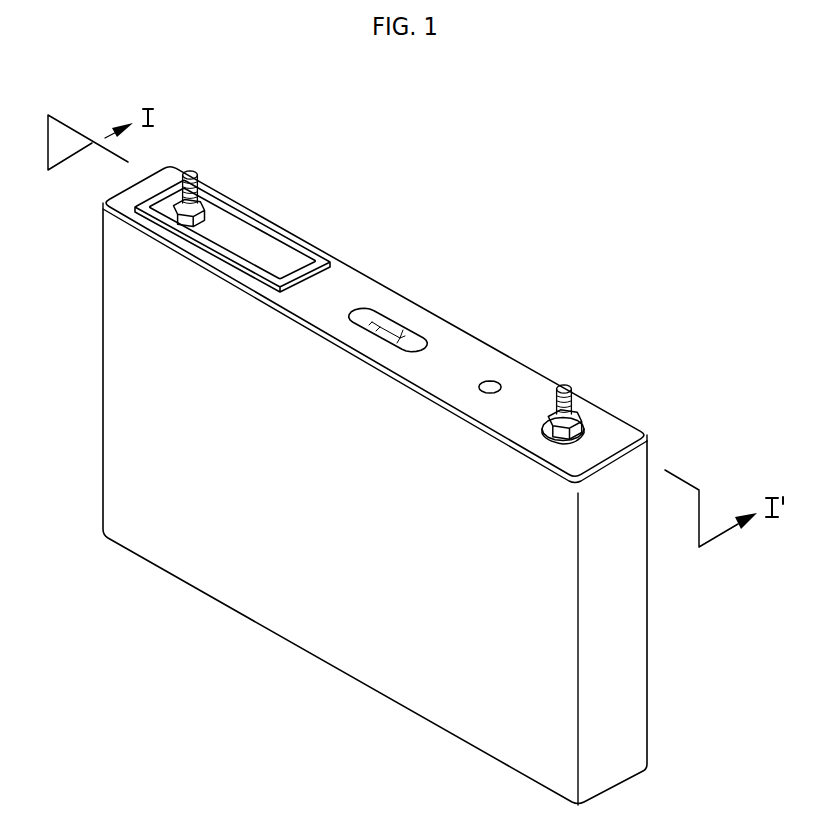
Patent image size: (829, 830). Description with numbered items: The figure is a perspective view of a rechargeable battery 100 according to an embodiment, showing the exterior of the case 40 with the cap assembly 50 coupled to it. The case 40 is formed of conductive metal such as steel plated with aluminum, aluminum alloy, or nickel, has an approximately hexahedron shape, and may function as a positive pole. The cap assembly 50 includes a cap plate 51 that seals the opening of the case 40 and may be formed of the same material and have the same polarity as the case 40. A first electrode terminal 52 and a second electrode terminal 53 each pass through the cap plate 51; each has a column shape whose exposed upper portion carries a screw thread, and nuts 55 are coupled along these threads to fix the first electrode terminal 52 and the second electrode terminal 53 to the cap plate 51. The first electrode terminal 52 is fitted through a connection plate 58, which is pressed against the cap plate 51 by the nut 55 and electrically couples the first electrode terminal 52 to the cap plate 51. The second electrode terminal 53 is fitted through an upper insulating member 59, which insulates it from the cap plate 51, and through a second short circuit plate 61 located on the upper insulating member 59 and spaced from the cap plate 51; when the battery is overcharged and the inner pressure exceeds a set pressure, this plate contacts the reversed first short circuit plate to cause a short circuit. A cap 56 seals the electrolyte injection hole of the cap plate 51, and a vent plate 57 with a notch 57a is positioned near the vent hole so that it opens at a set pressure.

The rechargeable battery 100 is at (428, 141).
The case 40 is at (318, 643).
The cap assembly 50 is at (480, 331).
The cap plate 51 is at (362, 293).
The first electrode terminal 52 is at (565, 386).
The second electrode terminal 53 is at (192, 170).
The nut 55 is at (172, 220).
The cap 56 is at (497, 383).
The vent plate 57 is at (392, 315).
The notch 57a is at (398, 328).
The connection plate 58 is at (585, 427).
The upper insulating member 59 is at (263, 227).
The second short circuit plate 61 is at (223, 227).